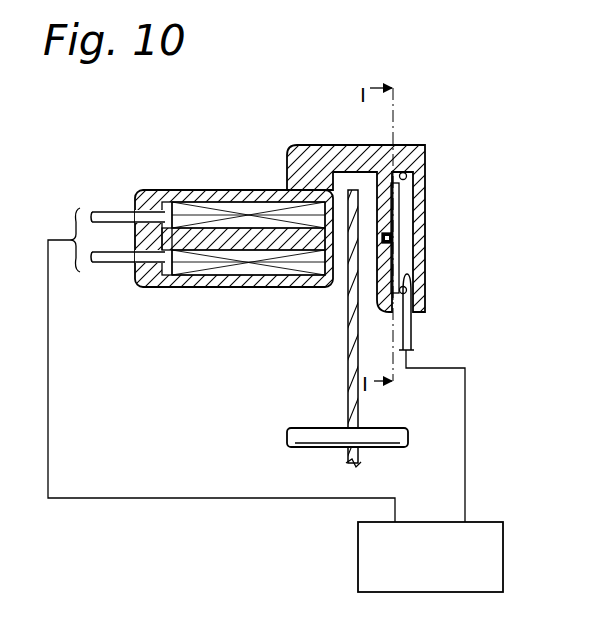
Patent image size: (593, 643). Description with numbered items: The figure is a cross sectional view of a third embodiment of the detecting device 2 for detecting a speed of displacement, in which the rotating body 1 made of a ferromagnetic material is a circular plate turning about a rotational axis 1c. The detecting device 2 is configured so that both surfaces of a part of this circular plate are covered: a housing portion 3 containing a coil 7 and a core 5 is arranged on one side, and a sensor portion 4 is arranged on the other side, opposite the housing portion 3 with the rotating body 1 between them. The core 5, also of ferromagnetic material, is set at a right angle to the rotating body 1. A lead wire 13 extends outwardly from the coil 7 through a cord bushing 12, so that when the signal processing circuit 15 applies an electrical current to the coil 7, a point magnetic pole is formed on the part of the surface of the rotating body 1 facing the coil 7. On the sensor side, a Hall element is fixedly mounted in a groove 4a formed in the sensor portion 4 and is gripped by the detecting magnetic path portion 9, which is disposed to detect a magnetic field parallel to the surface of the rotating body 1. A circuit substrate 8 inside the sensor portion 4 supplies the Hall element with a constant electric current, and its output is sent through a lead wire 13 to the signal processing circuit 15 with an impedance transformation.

The rotating body 1 is at (352, 327).
The rotational axis 1c is at (318, 440).
The detecting device 2 is at (285, 139).
The housing portion 3 is at (183, 192).
The sensor portion 4 is at (385, 178).
The groove 4a is at (393, 237).
The core 5 is at (224, 252).
The coil 7 is at (225, 207).
The circuit substrate 8 is at (404, 178).
The detecting magnetic path portion 9 is at (395, 243).
The cord bushing 12 is at (133, 278).
The lead wire 13 is at (112, 217).
The signal processing circuit 15 is at (545, 586).